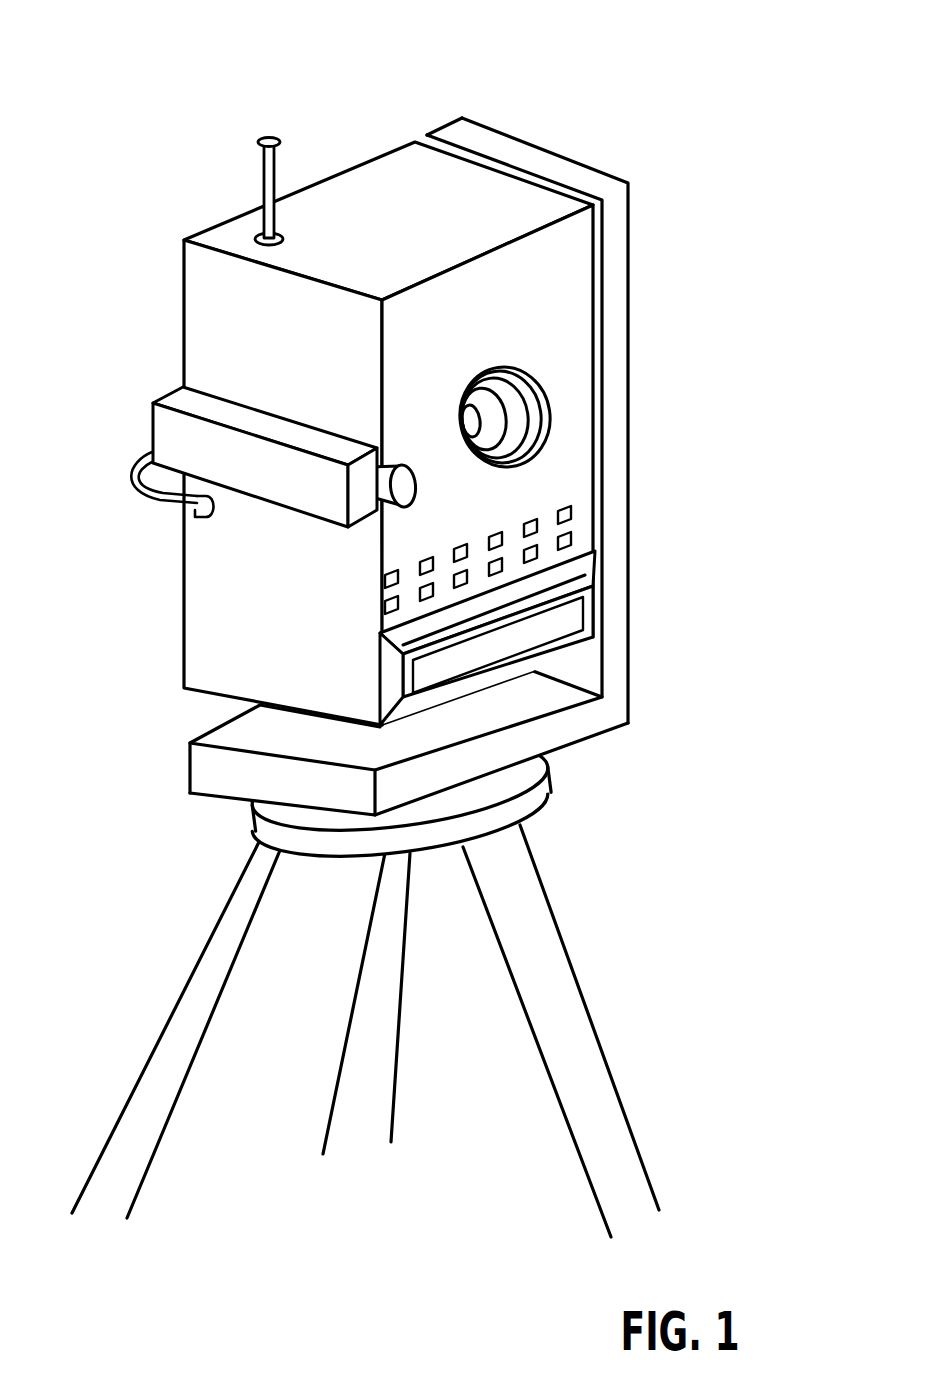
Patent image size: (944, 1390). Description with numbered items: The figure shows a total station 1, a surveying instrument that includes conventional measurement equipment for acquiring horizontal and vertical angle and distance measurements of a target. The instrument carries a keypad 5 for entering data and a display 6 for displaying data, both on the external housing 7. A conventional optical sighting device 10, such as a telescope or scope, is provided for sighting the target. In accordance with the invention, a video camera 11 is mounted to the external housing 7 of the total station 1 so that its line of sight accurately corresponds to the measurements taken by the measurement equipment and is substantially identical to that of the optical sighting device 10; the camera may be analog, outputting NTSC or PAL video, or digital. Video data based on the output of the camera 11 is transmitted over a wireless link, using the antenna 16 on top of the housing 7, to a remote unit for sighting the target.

The total station 1 is at (527, 80).
The keypad 5 is at (573, 512).
The display 6 is at (590, 612).
The external housing 7 is at (184, 288).
The optical sighting device 10 is at (502, 365).
The video camera 11 is at (153, 414).
The antenna 16 is at (273, 168).